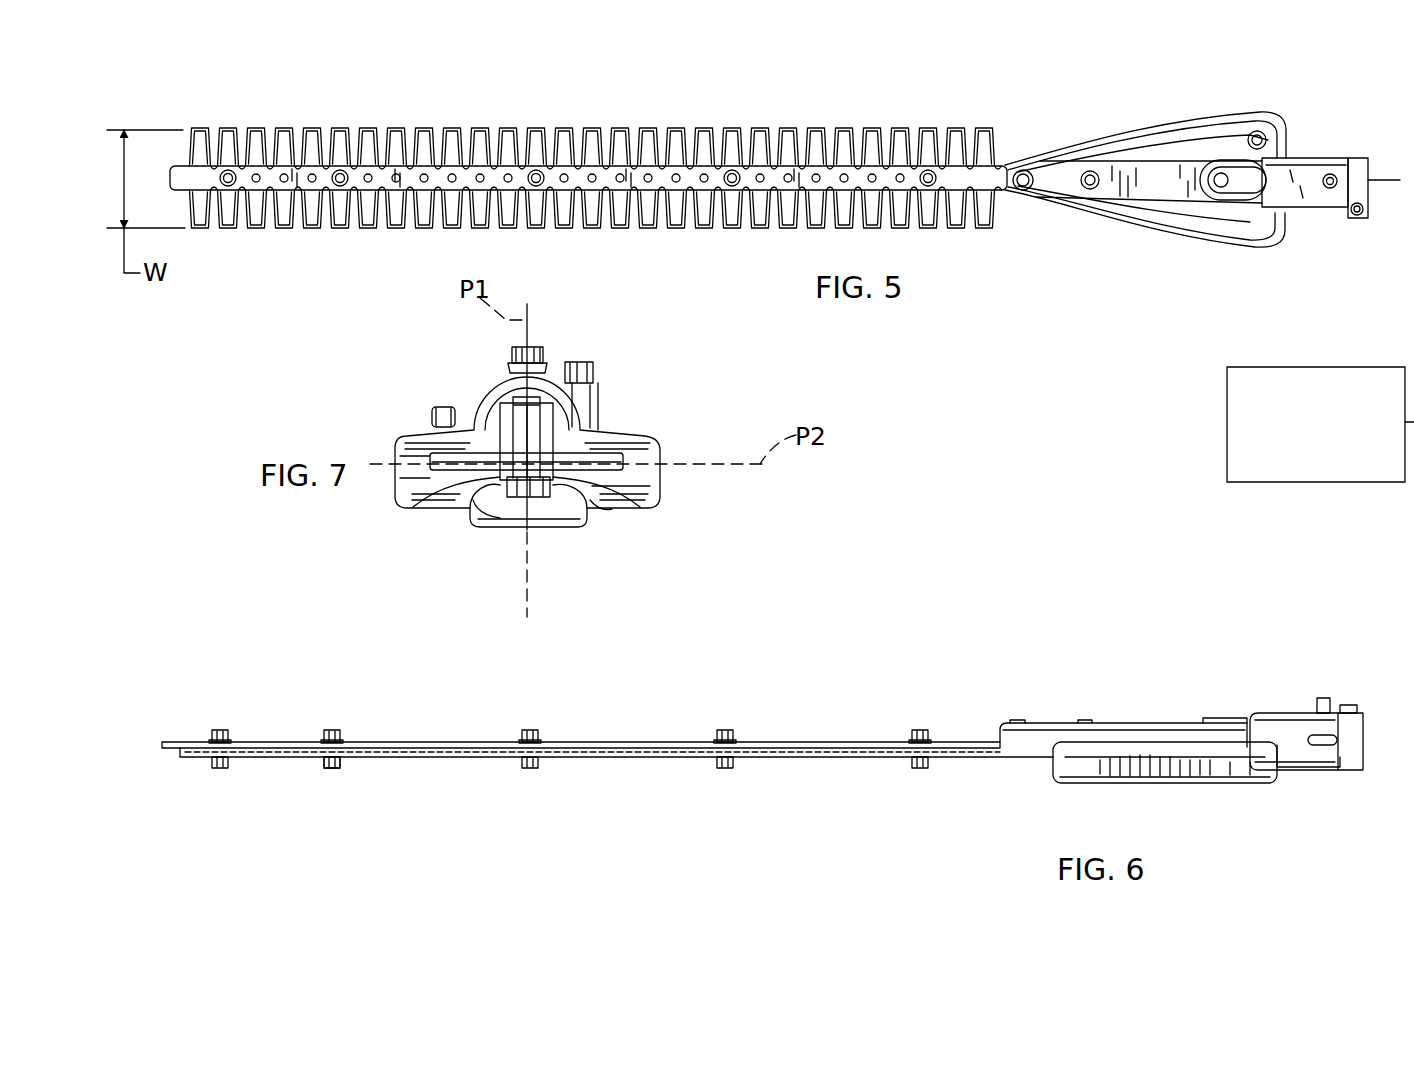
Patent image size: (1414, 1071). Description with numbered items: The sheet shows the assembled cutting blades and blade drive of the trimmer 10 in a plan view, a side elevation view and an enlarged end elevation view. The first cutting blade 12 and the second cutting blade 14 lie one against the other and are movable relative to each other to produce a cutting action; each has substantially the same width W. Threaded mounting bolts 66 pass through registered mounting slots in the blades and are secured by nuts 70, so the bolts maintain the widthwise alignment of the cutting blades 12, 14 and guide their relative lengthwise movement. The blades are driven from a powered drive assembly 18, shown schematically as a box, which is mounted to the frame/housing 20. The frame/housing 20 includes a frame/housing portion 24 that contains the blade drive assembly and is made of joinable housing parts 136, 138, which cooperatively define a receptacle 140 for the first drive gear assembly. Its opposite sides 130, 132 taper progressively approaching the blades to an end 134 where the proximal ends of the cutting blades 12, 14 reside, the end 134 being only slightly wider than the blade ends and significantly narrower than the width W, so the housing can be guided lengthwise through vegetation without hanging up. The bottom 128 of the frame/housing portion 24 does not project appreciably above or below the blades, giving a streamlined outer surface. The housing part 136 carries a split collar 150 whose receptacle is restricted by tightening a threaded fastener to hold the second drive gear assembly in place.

In FIG. 5, the trimmer 10 is at (898, 104).
In FIG. 7, the trimmer 10 is at (626, 393).
In FIG. 6, the trimmer 10 is at (982, 708).
In FIG. 5, the first cutting blade 12 is at (378, 150).
In FIG. 7, the first cutting blade 12 is at (436, 455).
In FIG. 6, the first cutting blade 12 is at (805, 740).
In FIG. 5, the second cutting blade 14 is at (457, 148).
In FIG. 7, the second cutting blade 14 is at (476, 522).
In FIG. 6, the second cutting blade 14 is at (805, 760).
In FIG. 5, the powered drive assembly 18 is at (1253, 483).
In FIG. 7, the frame/housing 20 is at (657, 508).
In FIG. 6, the frame/housing 20 is at (1123, 710).
In FIG. 5, the frame/housing portion 24 is at (1212, 260).
In FIG. 7, the frame/housing portion 24 is at (451, 508).
In FIG. 6, the frame/housing portion 24 is at (1168, 720).
In FIG. 6, the mounting bolts 66 is at (332, 769).
In FIG. 5, the nuts 70 is at (546, 171).
In FIG. 6, the nuts 70 is at (332, 729).
In FIG. 7, the bottom 128 is at (513, 538).
In FIG. 6, the bottom 128 is at (1198, 790).
In FIG. 5, the side 130 is at (1166, 108).
In FIG. 5, the side 132 is at (1160, 252).
In FIG. 5, the end 134 is at (1012, 150).
In FIG. 7, the housing part 136 is at (614, 430).
In FIG. 7, the housing part 138 is at (607, 512).
In FIG. 5, the receptacle 140 is at (1199, 217).
In FIG. 7, the receptacle 140 is at (390, 447).
In FIG. 6, the receptacle 140 is at (1143, 738).
In FIG. 5, the split collar 150 is at (1306, 153).
In FIG. 6, the split collar 150 is at (1303, 727).